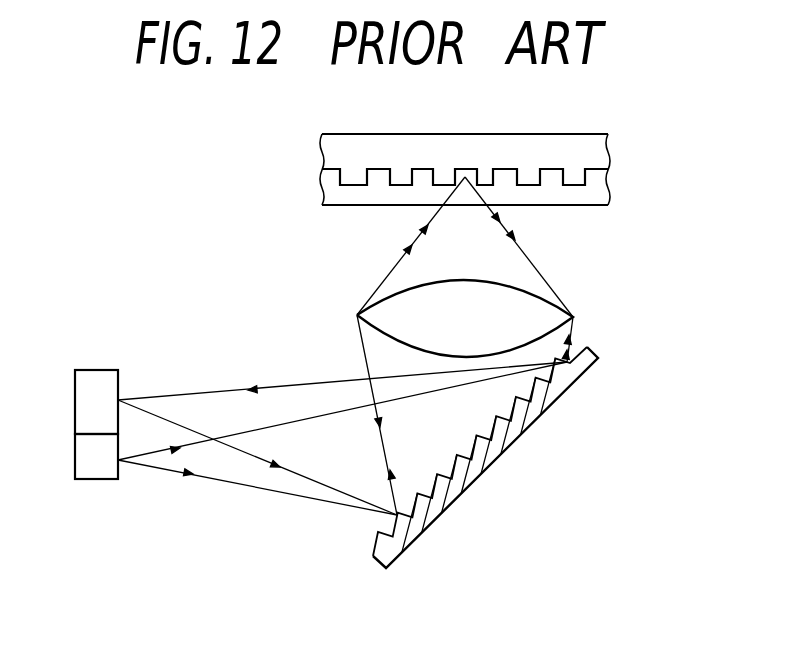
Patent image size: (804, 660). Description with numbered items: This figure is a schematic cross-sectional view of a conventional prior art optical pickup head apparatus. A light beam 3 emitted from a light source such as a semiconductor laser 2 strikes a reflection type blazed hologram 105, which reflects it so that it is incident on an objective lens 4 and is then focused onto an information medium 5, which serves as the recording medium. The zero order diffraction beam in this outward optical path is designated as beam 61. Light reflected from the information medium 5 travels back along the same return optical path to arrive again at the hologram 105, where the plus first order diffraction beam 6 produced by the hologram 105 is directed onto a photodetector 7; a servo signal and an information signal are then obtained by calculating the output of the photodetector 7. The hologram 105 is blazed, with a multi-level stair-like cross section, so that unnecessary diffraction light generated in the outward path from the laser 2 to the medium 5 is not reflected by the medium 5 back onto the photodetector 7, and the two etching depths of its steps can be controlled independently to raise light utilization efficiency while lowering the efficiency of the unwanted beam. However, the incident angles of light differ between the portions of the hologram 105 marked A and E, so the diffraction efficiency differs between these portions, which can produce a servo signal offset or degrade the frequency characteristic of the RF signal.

The information medium 5 is at (565, 145).
The 0 order diffraction beam 61 is at (403, 278).
The objective lens 4 is at (377, 310).
The reflection type blazed hologram 105 is at (453, 493).
The portion of hologram E is at (393, 514).
The portion of hologram A is at (570, 353).
The photodetector 7 is at (95, 380).
The semiconductor laser 2 is at (103, 472).
The +1st order diffraction beam 6 is at (143, 420).
The light beam 3 is at (142, 442).